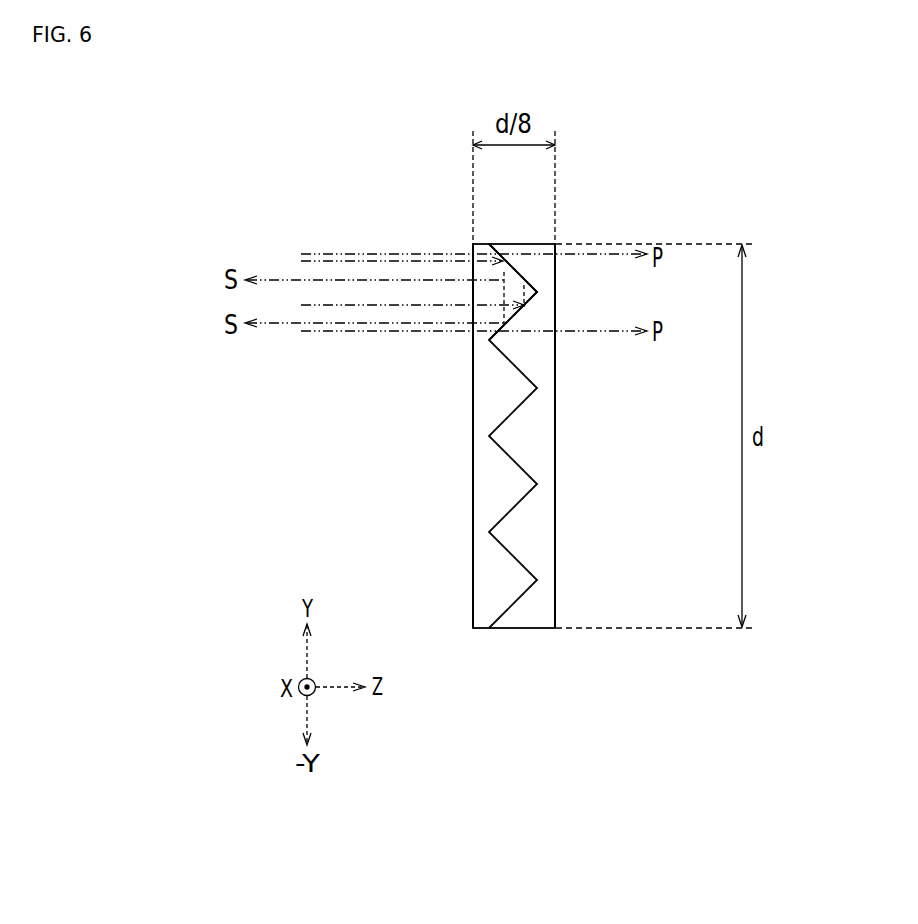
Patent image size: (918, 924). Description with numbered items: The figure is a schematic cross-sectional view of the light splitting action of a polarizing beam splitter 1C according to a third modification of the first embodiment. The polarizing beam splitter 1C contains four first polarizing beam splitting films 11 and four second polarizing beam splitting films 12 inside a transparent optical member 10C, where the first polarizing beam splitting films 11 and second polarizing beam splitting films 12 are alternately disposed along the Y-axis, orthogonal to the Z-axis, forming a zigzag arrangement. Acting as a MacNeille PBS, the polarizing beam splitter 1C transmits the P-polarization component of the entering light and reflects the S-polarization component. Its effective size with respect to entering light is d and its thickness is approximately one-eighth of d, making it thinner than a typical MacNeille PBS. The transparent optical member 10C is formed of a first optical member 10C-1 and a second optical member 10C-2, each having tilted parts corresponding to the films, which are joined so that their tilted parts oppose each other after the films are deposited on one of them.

The polarizing beam splitter 1C is at (389, 205).
The transparent optical member 10C is at (557, 745).
The first optical member 10C-1 is at (478, 630).
The second optical member 10C-2 is at (532, 630).
The first polarizing beam splitting film 11 is at (525, 303).
The second polarizing beam splitting film 12 is at (531, 381).